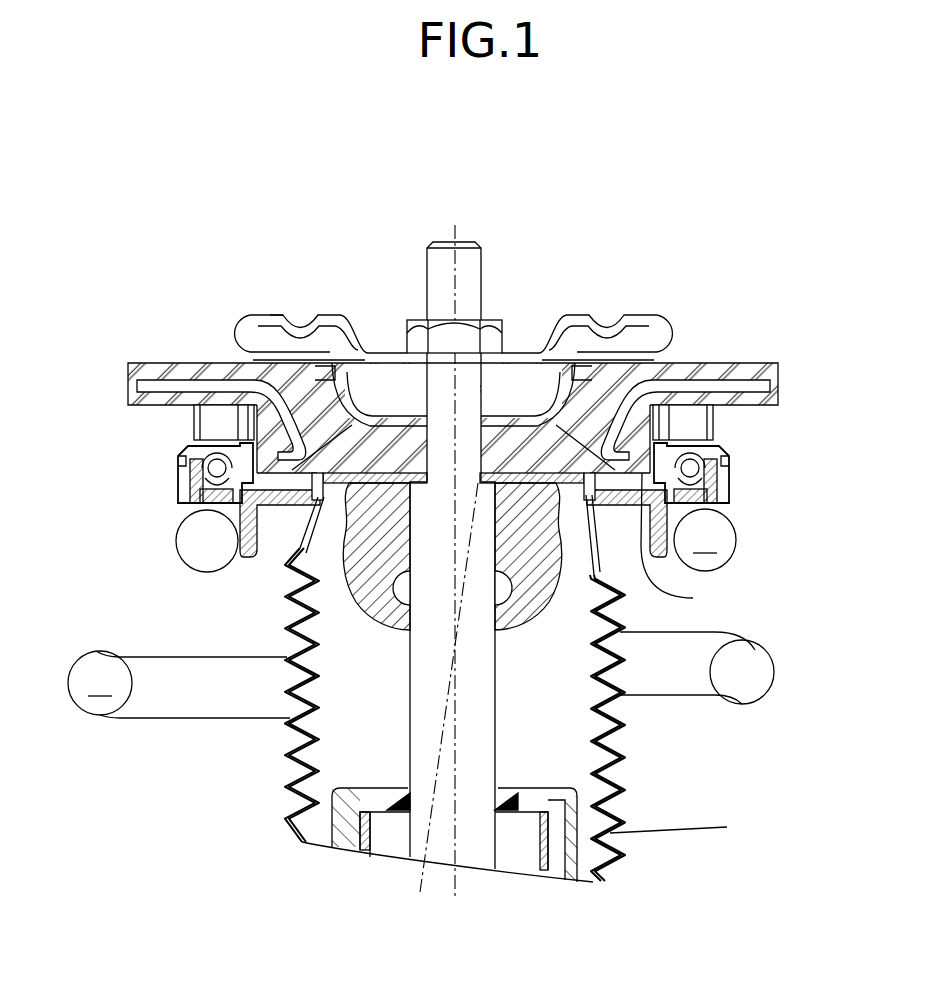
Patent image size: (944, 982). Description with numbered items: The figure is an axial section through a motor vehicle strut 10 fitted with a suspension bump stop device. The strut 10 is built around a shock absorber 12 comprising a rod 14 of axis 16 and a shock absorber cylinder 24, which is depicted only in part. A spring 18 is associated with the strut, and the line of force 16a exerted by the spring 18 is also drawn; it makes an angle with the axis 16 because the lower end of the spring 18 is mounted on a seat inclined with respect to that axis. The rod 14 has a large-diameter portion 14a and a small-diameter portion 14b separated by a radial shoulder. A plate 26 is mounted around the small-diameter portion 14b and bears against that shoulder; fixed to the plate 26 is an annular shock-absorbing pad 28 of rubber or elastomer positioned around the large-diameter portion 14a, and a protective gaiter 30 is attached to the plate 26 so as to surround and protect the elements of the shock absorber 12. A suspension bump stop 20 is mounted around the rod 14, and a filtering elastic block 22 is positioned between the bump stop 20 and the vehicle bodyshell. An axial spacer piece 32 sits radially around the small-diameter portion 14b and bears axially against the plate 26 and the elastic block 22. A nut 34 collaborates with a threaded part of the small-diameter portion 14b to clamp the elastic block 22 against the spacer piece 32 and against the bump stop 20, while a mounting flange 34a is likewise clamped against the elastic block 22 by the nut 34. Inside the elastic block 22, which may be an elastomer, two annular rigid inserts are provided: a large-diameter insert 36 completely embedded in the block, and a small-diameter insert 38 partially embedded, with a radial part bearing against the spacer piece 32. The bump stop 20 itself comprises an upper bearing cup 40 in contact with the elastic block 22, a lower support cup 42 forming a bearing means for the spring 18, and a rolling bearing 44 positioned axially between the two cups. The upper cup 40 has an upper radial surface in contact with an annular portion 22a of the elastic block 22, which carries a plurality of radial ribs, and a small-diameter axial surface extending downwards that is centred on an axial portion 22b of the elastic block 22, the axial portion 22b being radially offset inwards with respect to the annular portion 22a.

The strut 10 is at (250, 603).
The shock absorber 12 is at (582, 884).
The rod 14 is at (483, 828).
The large-diameter portion 14a is at (410, 833).
The small-diameter portion 14b is at (482, 387).
The axis 16 is at (456, 874).
The line of force 16a is at (427, 845).
The spring 18 is at (421, 671).
The suspension bump stop 20 is at (165, 485).
The filtering elastic block 22 is at (160, 363).
The annular portion 22a is at (715, 424).
The axial portion 22b is at (693, 598).
The shock absorber cylinder 24 is at (347, 827).
The plate 26 is at (335, 400).
The shock-absorbing pad 28 is at (380, 507).
The protective gaiter 30 is at (288, 639).
The axial spacer piece 32 is at (495, 452).
The nut 34 is at (413, 315).
The mounting flange 34a is at (298, 313).
The large-diameter insert 36 is at (200, 380).
The small-diameter insert 38 is at (375, 470).
The upper bearing cup 40 is at (720, 441).
The lower support cup 42 is at (731, 513).
The rolling bearing 44 is at (730, 480).